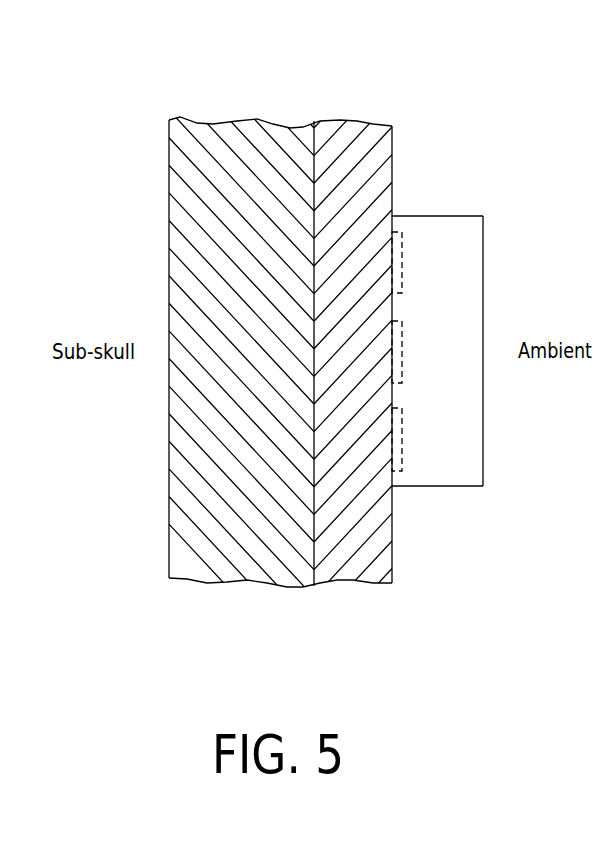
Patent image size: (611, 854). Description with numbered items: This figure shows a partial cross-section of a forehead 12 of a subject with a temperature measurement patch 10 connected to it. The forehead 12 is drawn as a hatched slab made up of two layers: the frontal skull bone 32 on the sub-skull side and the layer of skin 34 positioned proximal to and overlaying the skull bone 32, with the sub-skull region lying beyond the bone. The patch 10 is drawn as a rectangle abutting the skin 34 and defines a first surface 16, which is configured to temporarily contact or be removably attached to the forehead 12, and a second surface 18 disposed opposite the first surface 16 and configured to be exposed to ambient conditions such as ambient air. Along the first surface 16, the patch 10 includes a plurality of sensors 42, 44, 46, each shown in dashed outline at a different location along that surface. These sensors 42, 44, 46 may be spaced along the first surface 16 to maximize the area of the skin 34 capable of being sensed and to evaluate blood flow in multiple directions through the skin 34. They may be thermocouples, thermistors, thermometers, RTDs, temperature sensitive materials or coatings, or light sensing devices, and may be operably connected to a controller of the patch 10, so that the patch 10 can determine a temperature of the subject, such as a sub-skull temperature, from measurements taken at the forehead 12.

The patch 10 is at (457, 216).
The forehead 12 is at (392, 103).
The first surface 16 is at (394, 218).
The second surface 18 is at (483, 486).
The frontal skull bone 32 is at (218, 583).
The layer of skin 34 is at (353, 582).
The sensor 42 is at (402, 267).
The sensor 44 is at (403, 345).
The sensor 46 is at (403, 443).